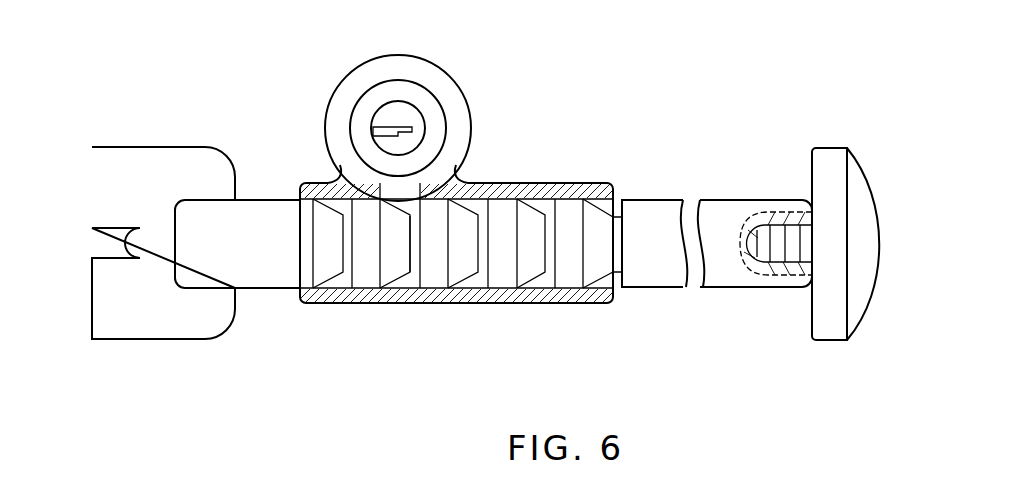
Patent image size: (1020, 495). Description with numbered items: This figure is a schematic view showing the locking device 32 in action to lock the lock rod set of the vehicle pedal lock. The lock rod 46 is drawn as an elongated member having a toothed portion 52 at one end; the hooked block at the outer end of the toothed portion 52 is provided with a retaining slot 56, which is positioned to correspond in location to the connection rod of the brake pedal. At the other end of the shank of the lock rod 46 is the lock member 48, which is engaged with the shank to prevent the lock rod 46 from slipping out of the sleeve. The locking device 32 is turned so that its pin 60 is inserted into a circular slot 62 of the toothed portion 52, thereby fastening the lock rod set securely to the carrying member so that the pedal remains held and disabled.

The locking device 32 is at (430, 58).
The lock rod 46 is at (653, 215).
The lock member 48 is at (853, 197).
The toothed portion 52 is at (395, 275).
The retaining slot 56 is at (105, 242).
The pin 60 is at (405, 200).
The circular slot 62 is at (411, 280).